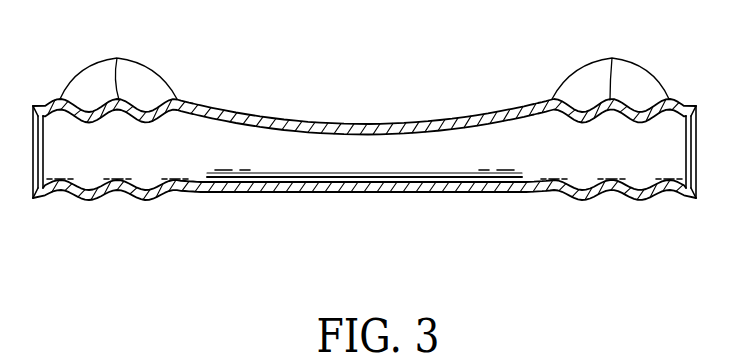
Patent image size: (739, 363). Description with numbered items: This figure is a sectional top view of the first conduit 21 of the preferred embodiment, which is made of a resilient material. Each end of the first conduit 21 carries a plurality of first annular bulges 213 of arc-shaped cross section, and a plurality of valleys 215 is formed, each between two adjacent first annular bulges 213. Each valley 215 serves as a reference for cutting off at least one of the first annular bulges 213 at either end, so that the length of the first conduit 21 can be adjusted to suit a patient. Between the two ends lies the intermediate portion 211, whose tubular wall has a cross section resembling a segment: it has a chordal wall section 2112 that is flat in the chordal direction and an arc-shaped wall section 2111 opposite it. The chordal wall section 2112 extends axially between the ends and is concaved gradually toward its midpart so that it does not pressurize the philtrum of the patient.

The first conduit 21 is at (364, 150).
The intermediate portion 211 is at (420, 192).
The arc-shaped wall section 2111 is at (293, 193).
The chordal wall section 2112 is at (357, 123).
The first annular bulges 213 is at (364, 65).
The valleys 215 is at (93, 197).